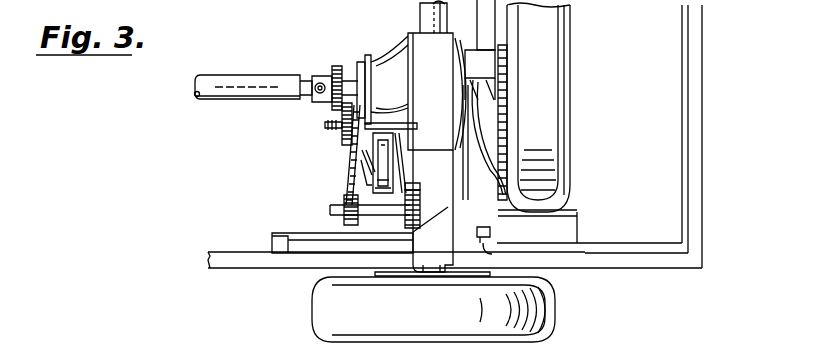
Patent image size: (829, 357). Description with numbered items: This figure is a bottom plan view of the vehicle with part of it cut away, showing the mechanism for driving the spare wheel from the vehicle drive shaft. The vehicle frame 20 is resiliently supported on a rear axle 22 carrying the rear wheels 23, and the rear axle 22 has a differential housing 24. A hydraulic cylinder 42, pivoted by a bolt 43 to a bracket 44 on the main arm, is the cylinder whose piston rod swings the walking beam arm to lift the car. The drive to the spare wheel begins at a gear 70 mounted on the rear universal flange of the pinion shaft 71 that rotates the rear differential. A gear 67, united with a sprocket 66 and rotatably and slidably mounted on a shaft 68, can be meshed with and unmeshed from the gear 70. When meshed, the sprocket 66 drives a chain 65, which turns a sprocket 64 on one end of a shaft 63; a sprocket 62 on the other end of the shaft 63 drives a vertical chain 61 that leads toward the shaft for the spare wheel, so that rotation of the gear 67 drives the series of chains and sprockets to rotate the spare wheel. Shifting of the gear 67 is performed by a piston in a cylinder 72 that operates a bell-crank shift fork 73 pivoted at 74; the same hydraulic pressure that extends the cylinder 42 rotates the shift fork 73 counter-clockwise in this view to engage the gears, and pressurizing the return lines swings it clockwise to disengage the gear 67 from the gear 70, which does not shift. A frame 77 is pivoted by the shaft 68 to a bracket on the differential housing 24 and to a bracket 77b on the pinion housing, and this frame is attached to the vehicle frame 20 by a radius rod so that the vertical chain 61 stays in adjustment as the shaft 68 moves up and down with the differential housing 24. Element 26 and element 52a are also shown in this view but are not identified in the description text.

The vehicle frame 20 is at (208, 254).
The rear axle 22 is at (420, 14).
The rear wheel 23 is at (555, 312).
The differential housing 24 is at (412, 80).
The support column 26 is at (478, 20).
The hydraulic cylinder 42 is at (468, 168).
The bolt 43 is at (490, 232).
The bracket 44 is at (497, 254).
The roller 52a is at (555, 60).
The vertical chain 61 is at (425, 187).
The sprocket 62 is at (420, 206).
The shaft 63 is at (330, 208).
The sprocket 64 is at (345, 226).
The chain 65 is at (354, 155).
The sprocket 66 is at (372, 98).
The gear 67 is at (341, 141).
The shaft 68 is at (325, 125).
The gear 70 is at (336, 66).
The pinion shaft 71 is at (358, 76).
The cylinder 72 is at (386, 166).
The bell-crank shift fork 73 is at (362, 160).
The pivot 74 is at (360, 178).
The frame 77 is at (402, 152).
The bracket 77b is at (368, 62).